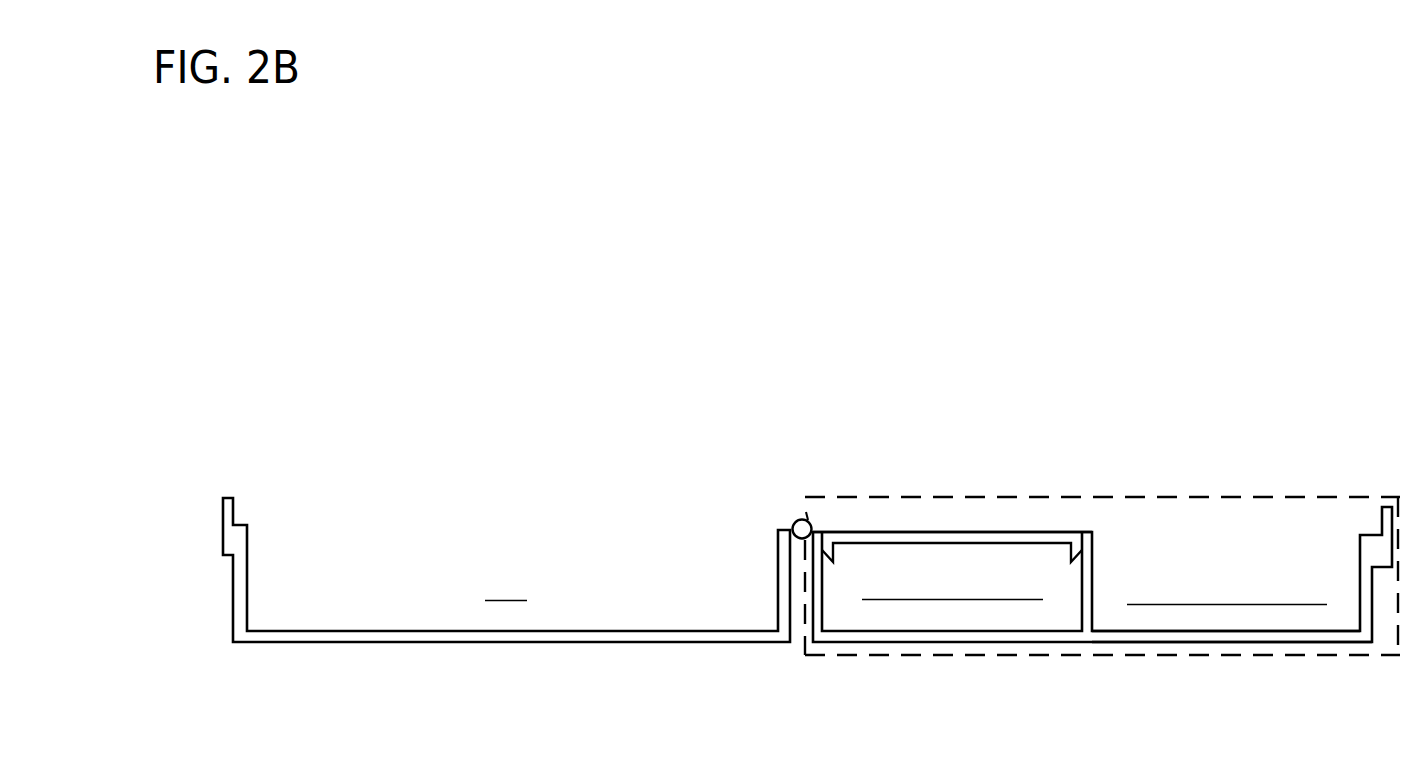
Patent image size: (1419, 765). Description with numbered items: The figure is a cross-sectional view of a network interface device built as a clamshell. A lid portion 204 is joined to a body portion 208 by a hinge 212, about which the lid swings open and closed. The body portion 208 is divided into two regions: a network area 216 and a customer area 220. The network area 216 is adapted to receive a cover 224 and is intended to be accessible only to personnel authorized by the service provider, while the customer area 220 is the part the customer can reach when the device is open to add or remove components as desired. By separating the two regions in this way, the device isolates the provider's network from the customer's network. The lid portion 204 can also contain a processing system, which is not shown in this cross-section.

The lid portion 204 is at (482, 632).
The body portion 208 is at (1198, 497).
The hinge 212 is at (803, 519).
The network area 216 is at (952, 628).
The customer area 220 is at (1220, 628).
The network area cover 224 is at (913, 535).